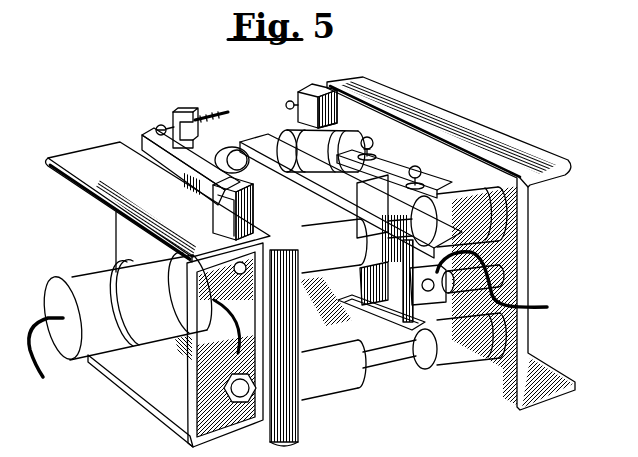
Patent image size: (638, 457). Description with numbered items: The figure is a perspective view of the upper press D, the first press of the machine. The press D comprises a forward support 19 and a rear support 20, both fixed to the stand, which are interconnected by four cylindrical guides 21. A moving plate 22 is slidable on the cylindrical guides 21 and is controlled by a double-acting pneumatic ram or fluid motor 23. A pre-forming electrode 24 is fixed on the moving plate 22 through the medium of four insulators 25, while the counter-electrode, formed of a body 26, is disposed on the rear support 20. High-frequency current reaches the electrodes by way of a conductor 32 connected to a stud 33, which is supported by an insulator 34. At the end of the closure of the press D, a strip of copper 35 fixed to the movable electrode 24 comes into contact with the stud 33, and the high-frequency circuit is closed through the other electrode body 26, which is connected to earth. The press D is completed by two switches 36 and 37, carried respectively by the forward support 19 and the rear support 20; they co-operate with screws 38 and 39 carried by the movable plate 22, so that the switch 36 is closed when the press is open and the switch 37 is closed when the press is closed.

The forward support 19 is at (118, 240).
The rear support 20 is at (525, 258).
The cylindrical guides 21 is at (366, 202).
The moving plate 22 is at (300, 426).
The double-acting pneumatic ram 23 is at (165, 304).
The pre-forming electrode 24 is at (264, 146).
The insulators 25 is at (222, 162).
The body of the counter-electrode 26 is at (400, 160).
The conductor 32 is at (526, 300).
The stud 33 is at (428, 290).
The insulator 34 is at (464, 290).
The strip of copper 35 is at (372, 275).
The switch 36 is at (214, 214).
The switch 37 is at (300, 92).
The screw 38 is at (201, 102).
The screw 39 is at (236, 215).
The upper press D is at (285, 132).